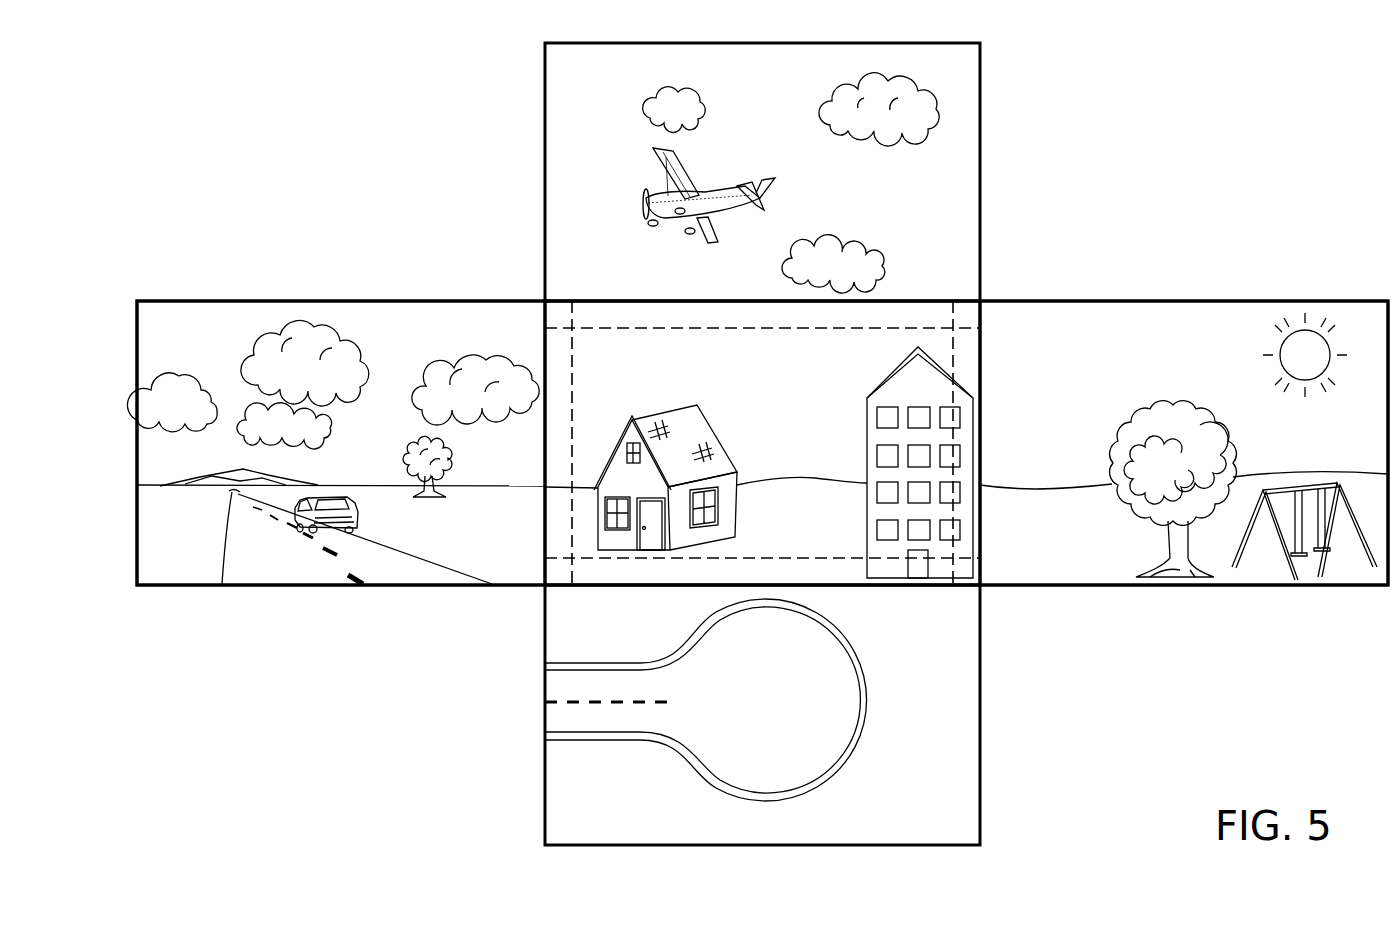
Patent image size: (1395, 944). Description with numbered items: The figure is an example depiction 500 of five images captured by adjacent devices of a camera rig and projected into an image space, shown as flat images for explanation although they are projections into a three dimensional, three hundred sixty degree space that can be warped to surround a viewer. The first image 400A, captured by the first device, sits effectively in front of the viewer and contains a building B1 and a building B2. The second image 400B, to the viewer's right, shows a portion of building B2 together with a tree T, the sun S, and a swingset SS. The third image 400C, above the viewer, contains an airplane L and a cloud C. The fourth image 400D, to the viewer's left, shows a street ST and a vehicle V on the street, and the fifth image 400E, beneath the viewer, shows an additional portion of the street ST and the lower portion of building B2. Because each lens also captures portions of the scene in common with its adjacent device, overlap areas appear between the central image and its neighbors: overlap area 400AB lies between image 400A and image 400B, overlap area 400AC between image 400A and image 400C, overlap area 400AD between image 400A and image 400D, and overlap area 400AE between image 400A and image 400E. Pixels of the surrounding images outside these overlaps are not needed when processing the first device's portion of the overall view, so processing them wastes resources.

The depiction 500 is at (1290, 114).
The first image 400A is at (825, 442).
The second image 400B is at (1080, 572).
The third image 400C is at (612, 80).
The fourth image 400D is at (208, 338).
The fifth image 400E is at (962, 832).
The overlap area 400AB is at (965, 364).
The overlap area 400AC is at (632, 318).
The overlap area 400AD is at (555, 524).
The overlap area 400AE is at (627, 572).
The airplane L is at (720, 198).
The cloud C is at (905, 127).
The building B1 is at (673, 408).
The building B2 is at (880, 390).
The vehicle V is at (329, 498).
The street ST is at (249, 543).
The sun S is at (1278, 350).
The tree T is at (1142, 423).
The swingset SS is at (1282, 487).